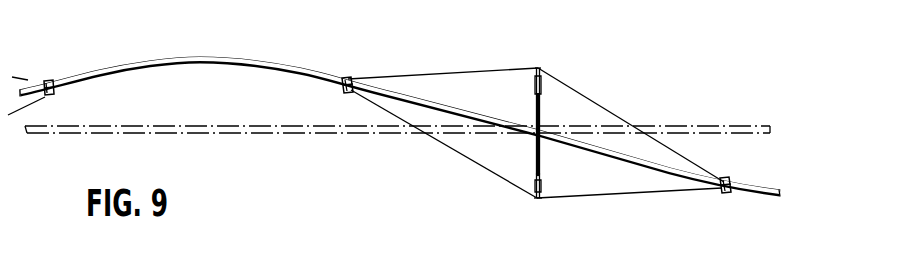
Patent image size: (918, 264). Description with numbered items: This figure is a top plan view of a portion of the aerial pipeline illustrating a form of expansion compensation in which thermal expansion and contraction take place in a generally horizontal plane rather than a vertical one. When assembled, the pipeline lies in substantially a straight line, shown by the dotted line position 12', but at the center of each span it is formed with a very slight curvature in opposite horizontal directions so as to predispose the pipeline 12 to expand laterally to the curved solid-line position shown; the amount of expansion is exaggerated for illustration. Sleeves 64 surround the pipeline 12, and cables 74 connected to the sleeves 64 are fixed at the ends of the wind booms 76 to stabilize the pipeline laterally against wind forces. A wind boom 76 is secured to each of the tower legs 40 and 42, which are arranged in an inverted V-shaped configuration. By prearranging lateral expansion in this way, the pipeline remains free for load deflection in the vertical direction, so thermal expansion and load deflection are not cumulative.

The pipeline 12 is at (394, 118).
The dotted line position of pipeline 12' is at (397, 143).
The sleeve 64 is at (348, 78).
The cable 74 is at (472, 163).
The main support leg 40 is at (535, 160).
The main support leg 42 is at (534, 112).
The wind boom 76 is at (541, 78).